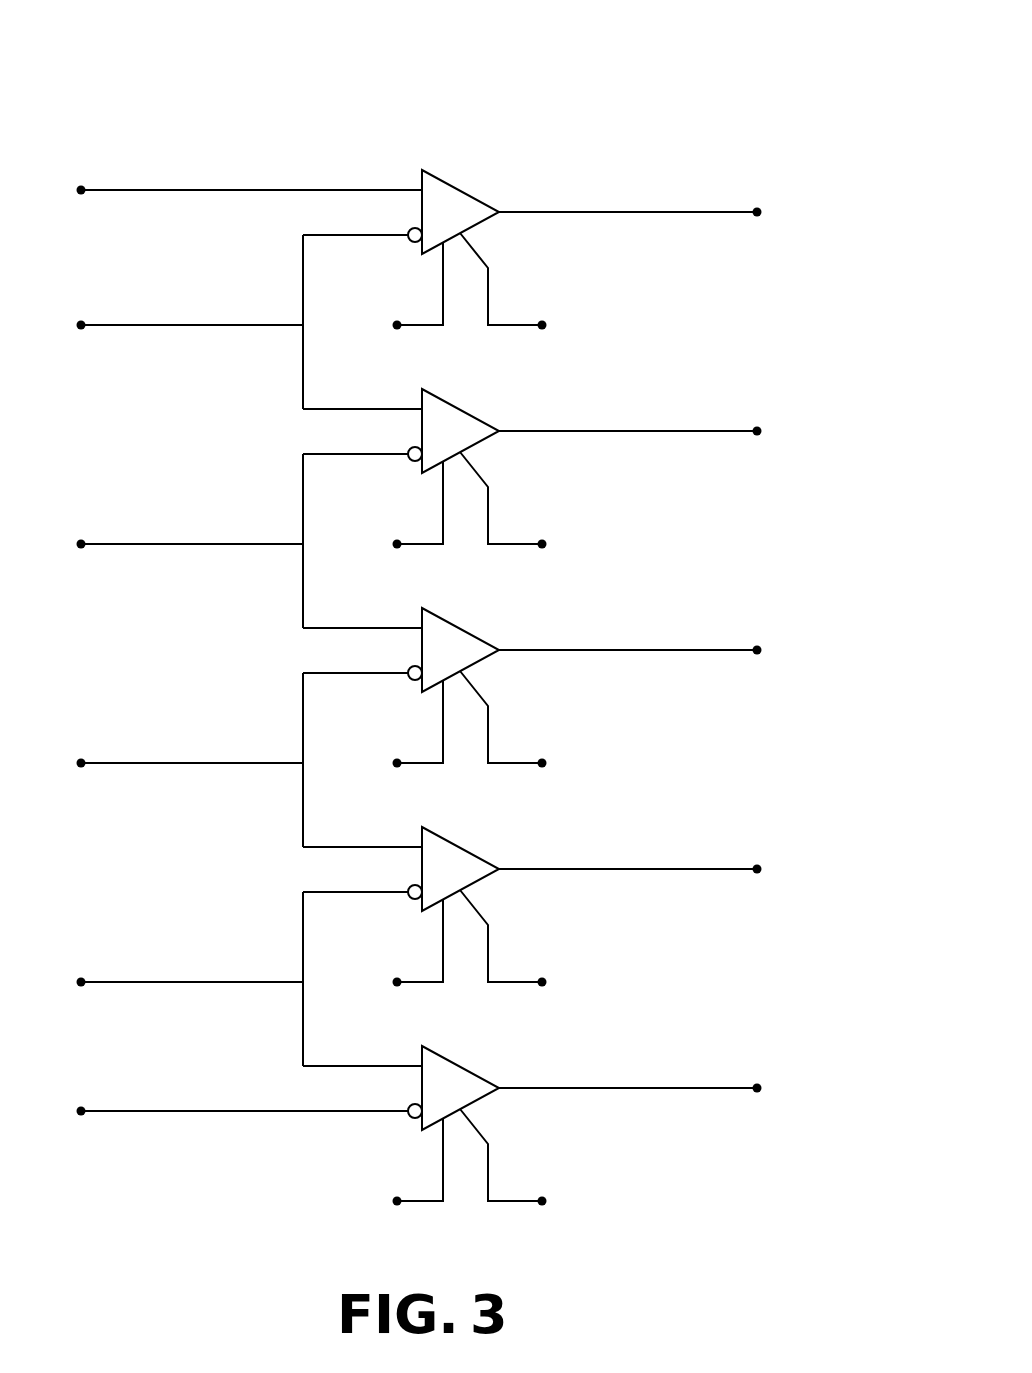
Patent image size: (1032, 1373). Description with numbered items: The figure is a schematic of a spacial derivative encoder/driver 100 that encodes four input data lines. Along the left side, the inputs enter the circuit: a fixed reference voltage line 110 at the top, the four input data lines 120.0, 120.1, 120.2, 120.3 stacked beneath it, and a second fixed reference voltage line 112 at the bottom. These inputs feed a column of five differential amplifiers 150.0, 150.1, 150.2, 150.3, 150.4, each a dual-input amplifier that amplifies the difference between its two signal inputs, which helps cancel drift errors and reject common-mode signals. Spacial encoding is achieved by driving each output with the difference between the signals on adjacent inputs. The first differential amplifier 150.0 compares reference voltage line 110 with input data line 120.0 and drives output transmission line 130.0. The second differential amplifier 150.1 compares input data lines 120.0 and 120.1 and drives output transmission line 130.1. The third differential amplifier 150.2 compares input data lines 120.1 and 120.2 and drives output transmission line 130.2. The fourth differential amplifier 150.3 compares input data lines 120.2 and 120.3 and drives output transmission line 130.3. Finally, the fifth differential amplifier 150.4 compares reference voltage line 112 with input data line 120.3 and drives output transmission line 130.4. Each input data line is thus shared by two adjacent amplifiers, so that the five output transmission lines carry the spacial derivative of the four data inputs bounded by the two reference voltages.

The spacial derivative encoder/driver 100 is at (680, 81).
The fixed reference voltage line 110 is at (194, 190).
The fixed reference voltage line 112 is at (194, 1111).
The input data line 120.0 is at (194, 325).
The input data line 120.1 is at (194, 544).
The input data line 120.2 is at (194, 763).
The input data line 120.3 is at (194, 982).
The output transmission line 130.0 is at (608, 210).
The output transmission line 130.1 is at (608, 429).
The output transmission line 130.2 is at (608, 648).
The output transmission line 130.3 is at (608, 867).
The output transmission line 130.4 is at (608, 1086).
The first differential amplifier 150.0 is at (462, 192).
The second differential amplifier 150.1 is at (462, 411).
The third differential amplifier 150.2 is at (462, 630).
The fourth differential amplifier 150.3 is at (462, 849).
The fifth differential amplifier 150.4 is at (462, 1068).